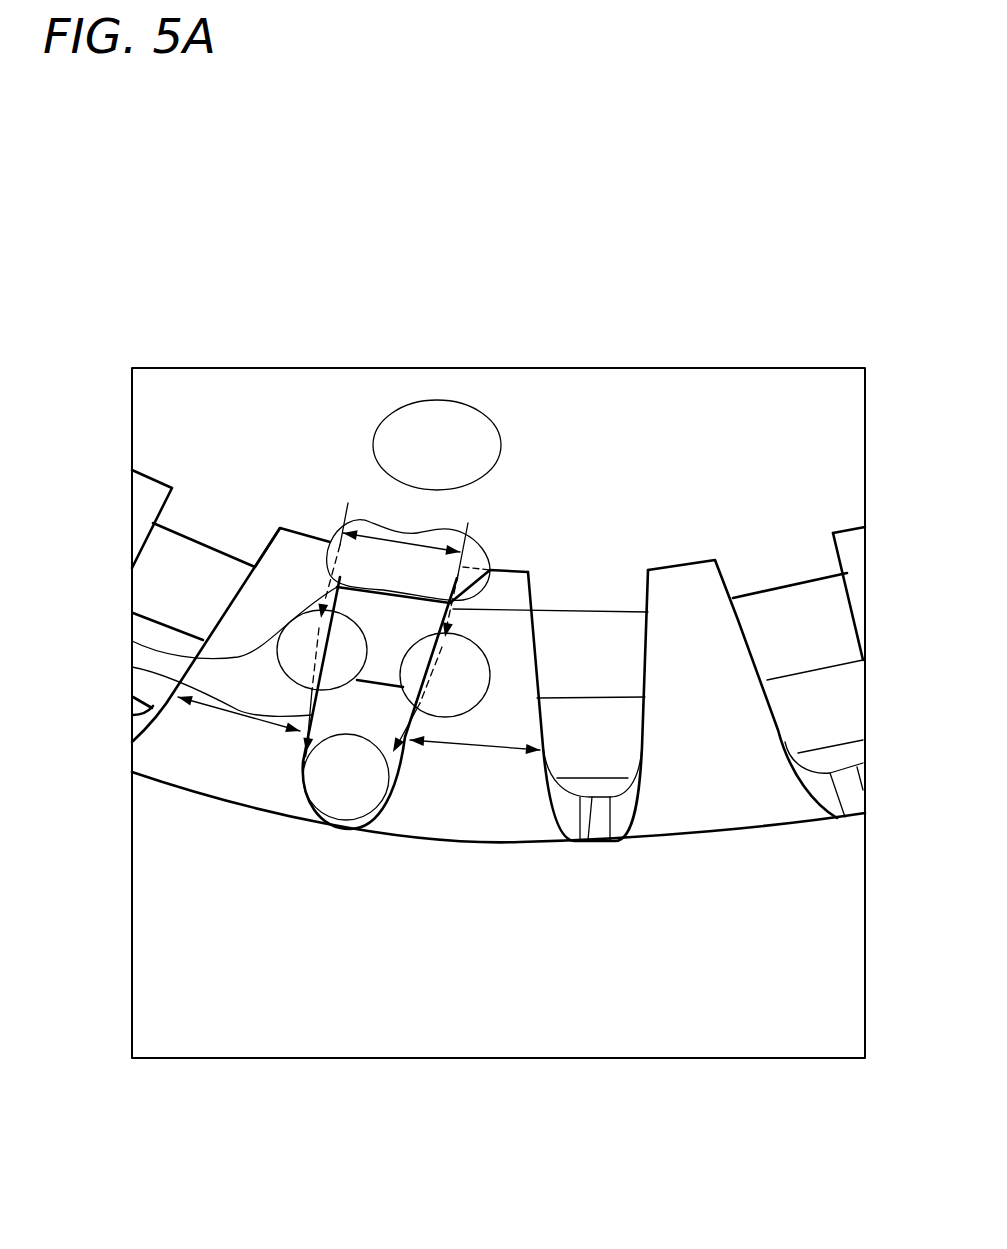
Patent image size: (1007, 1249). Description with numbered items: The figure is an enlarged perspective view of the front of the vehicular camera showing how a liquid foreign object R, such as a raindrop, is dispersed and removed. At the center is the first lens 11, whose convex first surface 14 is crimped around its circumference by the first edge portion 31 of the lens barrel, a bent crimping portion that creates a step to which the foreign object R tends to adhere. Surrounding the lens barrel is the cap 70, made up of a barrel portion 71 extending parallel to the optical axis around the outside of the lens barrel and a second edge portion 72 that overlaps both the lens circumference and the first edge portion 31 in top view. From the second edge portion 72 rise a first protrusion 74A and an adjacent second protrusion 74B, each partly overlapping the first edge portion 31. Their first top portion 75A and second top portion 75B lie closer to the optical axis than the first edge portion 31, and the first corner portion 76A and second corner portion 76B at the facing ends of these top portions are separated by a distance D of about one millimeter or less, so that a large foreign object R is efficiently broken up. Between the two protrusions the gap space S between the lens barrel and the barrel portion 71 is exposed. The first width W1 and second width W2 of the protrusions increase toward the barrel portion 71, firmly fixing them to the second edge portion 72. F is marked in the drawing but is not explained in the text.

The first lens 11 is at (733, 368).
The first surface 14 is at (757, 450).
The first edge portion 31 is at (788, 610).
The cap 70 is at (131, 944).
The barrel portion 71 is at (200, 1015).
The second edge portion 72 is at (150, 817).
The first protrusion 74A is at (232, 620).
The first top portion 75A is at (307, 540).
The first corner portion 76A is at (340, 545).
The second protrusion 74B is at (518, 647).
The second top portion 75B is at (503, 571).
The second corner portion 76B is at (465, 563).
The fiber F is at (416, 522).
The foreign object R is at (487, 413).
The gap space S is at (590, 822).
The distance D is at (401, 553).
The first width W1 is at (239, 721).
The second width W2 is at (475, 758).